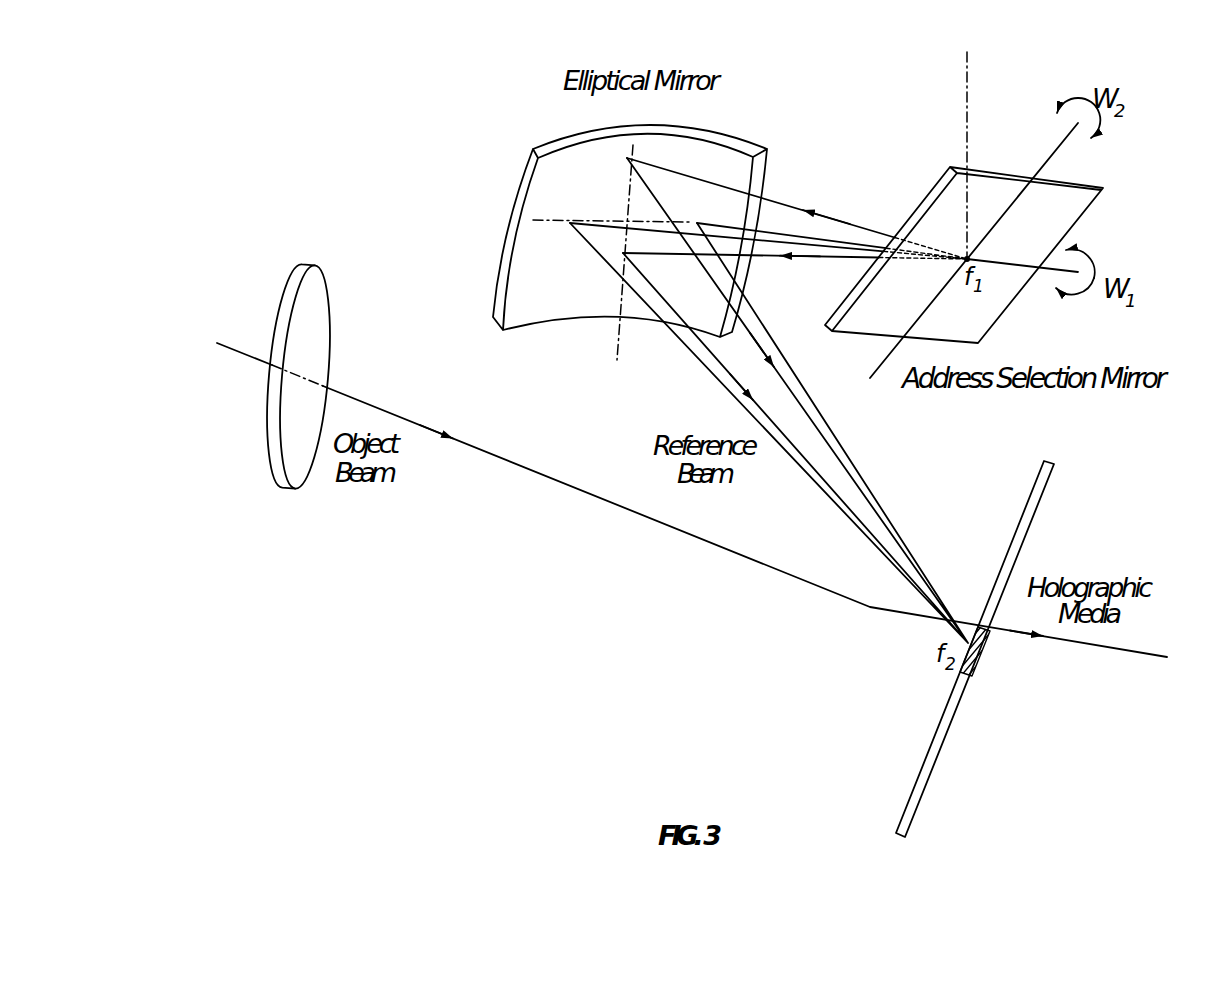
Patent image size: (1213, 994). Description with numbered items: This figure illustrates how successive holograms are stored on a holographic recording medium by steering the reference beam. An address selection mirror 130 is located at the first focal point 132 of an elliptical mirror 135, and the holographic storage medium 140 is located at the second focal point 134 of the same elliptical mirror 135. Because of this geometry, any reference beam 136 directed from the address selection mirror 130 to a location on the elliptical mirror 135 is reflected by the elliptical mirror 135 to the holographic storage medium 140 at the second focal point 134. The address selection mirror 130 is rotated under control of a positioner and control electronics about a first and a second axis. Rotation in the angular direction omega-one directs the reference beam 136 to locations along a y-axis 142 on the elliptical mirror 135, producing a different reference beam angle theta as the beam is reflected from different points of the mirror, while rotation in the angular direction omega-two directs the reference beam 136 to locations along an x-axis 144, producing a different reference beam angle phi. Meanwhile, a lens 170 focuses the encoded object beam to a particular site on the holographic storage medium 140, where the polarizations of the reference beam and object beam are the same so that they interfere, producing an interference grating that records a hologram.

The address selection mirror 130 is at (1105, 203).
The first focal point 132 is at (977, 253).
The second focal point 134 is at (962, 627).
The elliptical mirror 135 is at (567, 120).
The reference beam 136 is at (973, 83).
The holographic storage medium 140 is at (927, 787).
The y-axis 142 is at (620, 352).
The x-axis 144 is at (543, 217).
The lens 170 is at (300, 255).